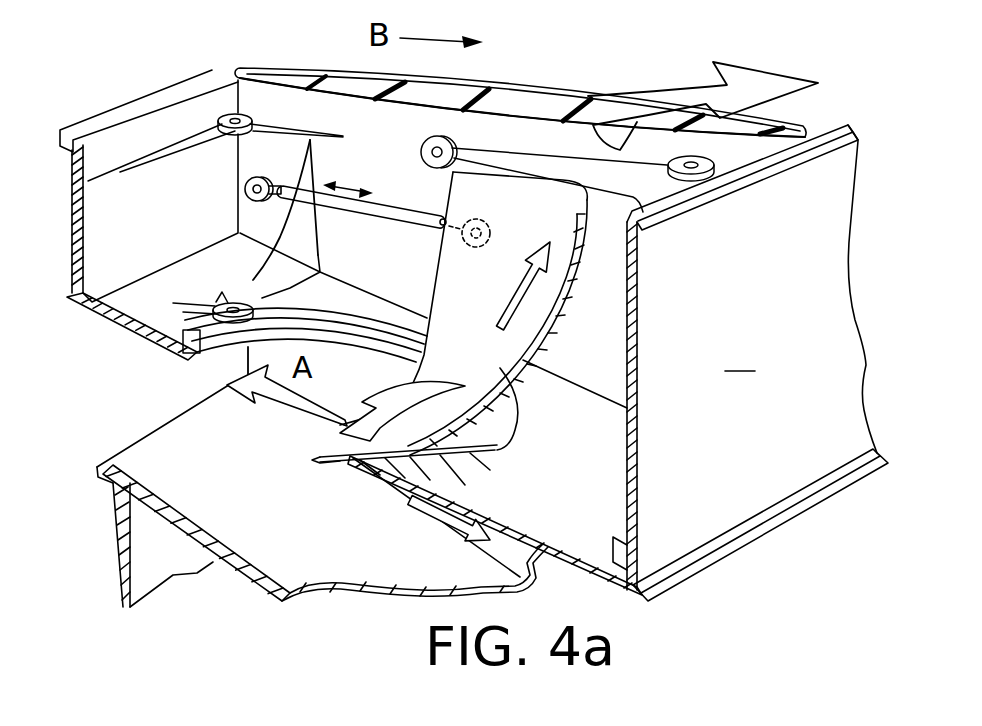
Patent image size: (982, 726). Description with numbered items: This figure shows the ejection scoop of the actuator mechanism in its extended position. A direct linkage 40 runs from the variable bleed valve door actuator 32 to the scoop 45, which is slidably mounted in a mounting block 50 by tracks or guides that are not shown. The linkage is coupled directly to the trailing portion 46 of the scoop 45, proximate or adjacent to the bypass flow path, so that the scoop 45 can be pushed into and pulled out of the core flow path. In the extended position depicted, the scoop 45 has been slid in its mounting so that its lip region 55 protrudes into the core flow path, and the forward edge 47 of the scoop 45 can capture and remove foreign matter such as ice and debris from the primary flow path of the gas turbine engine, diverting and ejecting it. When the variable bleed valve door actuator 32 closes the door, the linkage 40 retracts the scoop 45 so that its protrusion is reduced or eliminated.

The variable bleed valve door actuator 32 is at (250, 200).
The direct linkage 40 is at (401, 207).
The scoop 45 is at (485, 304).
The trailing portion 46 is at (521, 207).
The forward edge 47 is at (335, 386).
The mounting block 50 is at (705, 363).
The lip region 55 is at (333, 470).